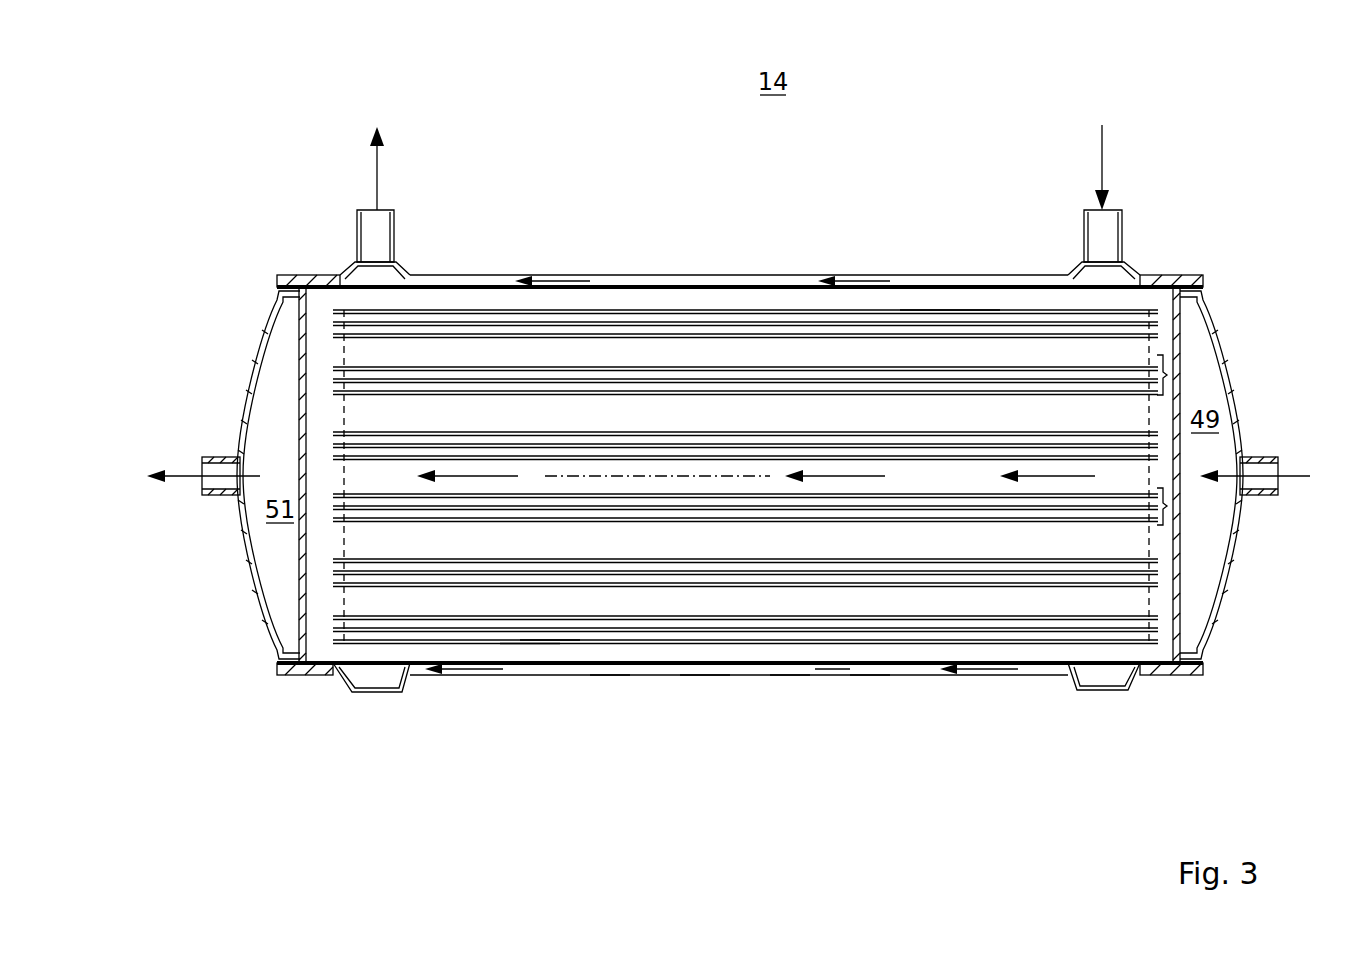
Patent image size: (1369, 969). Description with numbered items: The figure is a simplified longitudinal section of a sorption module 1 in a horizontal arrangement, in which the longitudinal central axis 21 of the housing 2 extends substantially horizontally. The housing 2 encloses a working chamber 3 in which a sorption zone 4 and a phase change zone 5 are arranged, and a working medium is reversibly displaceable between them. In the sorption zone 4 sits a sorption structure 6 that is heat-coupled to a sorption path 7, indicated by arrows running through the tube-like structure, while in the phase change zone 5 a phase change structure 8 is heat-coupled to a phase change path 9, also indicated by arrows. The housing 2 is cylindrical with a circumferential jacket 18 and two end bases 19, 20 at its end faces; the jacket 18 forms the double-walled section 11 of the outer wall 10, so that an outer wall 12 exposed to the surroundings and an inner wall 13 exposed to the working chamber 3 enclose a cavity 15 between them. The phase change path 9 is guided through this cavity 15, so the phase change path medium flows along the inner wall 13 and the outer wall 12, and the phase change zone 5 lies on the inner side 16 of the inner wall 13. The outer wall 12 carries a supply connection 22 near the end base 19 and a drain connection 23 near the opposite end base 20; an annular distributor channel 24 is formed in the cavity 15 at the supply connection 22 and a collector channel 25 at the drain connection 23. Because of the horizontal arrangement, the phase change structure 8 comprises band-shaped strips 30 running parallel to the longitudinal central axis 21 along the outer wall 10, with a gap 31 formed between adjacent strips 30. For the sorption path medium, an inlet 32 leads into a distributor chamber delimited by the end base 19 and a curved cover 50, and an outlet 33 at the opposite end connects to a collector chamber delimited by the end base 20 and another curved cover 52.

The sorption module 1 is at (1258, 158).
The housing 2 is at (768, 262).
The working chamber 3 is at (722, 278).
The sorption zone 4 is at (594, 325).
The phase change zone 5 is at (1004, 278).
The sorption structure 6 is at (663, 350).
The sorption path 7 is at (178, 474).
The phase change structure 8 is at (703, 662).
The phase change path 9 is at (380, 180).
The outer wall 10 is at (867, 692).
The section 11 is at (830, 738).
The outer wall 12 is at (540, 636).
The inner wall 13 is at (655, 667).
The cavity 15 is at (607, 672).
The inner side 16 is at (540, 636).
The jacket 18 is at (788, 692).
The end base 19 is at (1180, 565).
The end base 20 is at (300, 395).
The longitudinal central axis 21 is at (657, 472).
The supply connection 22 is at (1124, 236).
The drain connection 23 is at (396, 236).
The distributor channel 24 is at (1106, 690).
The collector channel 25 is at (378, 690).
The strips 30 is at (1168, 375).
The gap 31 is at (968, 470).
The inlet 32 is at (1262, 455).
The outlet 33 is at (220, 497).
The curved cover 50 is at (1230, 623).
The curved cover 52 is at (252, 330).